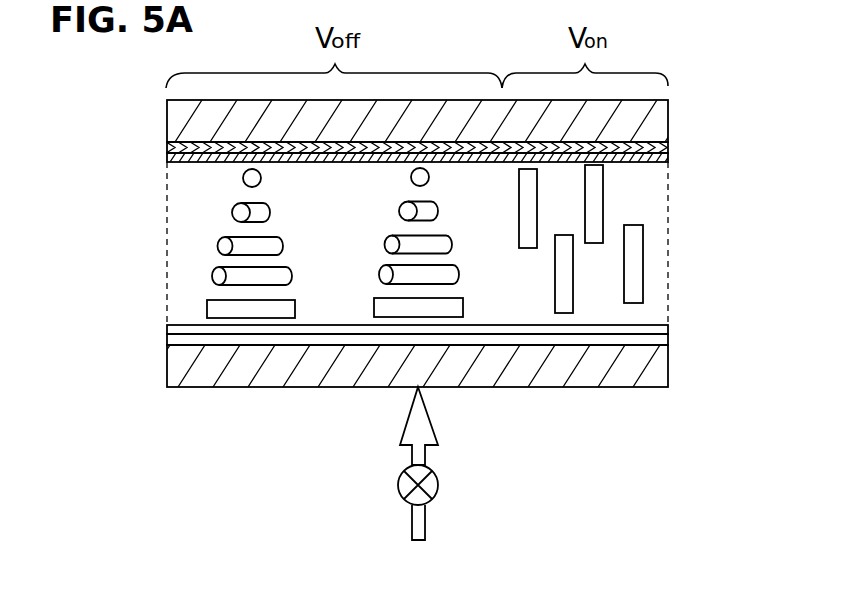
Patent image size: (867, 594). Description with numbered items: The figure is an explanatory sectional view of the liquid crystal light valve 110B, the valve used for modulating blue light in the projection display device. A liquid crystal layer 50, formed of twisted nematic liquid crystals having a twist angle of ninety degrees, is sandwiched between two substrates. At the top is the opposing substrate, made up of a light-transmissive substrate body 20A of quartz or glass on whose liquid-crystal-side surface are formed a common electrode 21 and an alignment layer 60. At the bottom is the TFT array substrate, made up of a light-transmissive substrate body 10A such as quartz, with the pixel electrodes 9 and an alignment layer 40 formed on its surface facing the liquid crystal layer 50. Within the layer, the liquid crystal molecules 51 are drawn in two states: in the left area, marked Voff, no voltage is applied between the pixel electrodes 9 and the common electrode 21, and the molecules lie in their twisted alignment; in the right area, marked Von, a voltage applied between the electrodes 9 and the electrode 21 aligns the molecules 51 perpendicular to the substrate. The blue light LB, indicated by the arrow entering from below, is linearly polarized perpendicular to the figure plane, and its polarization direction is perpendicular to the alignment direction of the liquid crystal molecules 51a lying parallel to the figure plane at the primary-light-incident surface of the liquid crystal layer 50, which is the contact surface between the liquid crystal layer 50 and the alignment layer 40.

The liquid crystal light valve 110B is at (692, 78).
The substrate body 20A is at (660, 118).
The common electrode 21 is at (664, 146).
The alignment layer 60 is at (666, 157).
The liquid crystal layer 50 is at (653, 210).
The liquid crystal molecules 51 is at (222, 245).
The liquid crystal molecules at primary-light-incident surface 51a is at (215, 307).
The alignment layer 40 is at (668, 333).
The pixel electrodes 9 is at (666, 343).
The substrate body 10A is at (665, 362).
The blue light LB is at (418, 457).